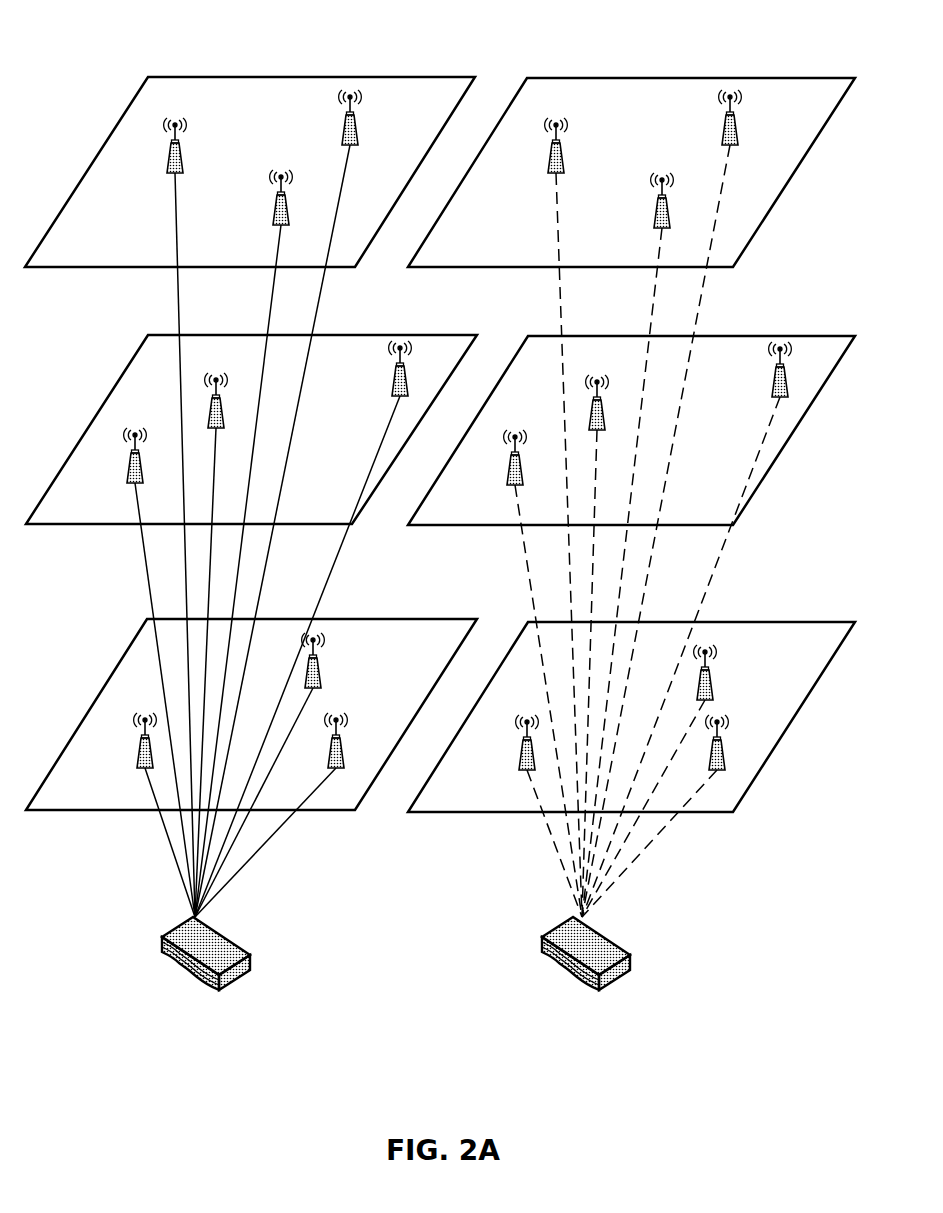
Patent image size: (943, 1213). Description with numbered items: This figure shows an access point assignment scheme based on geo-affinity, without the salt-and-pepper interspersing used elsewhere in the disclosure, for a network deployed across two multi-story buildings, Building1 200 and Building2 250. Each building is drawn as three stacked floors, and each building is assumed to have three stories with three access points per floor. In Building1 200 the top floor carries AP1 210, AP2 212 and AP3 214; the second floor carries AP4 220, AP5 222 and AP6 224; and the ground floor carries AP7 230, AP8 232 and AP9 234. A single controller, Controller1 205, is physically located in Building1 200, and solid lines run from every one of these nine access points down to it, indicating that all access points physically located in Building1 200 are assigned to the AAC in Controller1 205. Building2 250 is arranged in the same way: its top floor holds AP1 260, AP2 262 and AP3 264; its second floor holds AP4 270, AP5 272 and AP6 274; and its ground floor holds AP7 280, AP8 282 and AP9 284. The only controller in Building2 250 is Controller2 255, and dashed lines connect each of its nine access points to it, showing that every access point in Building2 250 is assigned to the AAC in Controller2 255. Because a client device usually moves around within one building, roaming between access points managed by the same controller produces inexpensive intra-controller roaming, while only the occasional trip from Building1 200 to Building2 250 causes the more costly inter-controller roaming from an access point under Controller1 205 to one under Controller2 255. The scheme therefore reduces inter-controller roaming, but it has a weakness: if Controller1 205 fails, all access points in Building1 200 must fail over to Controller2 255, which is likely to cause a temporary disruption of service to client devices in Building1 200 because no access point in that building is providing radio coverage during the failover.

The Building1 200 is at (282, 60).
The Controller1 205 is at (210, 1048).
The AP1 210 is at (152, 206).
The AP2 212 is at (329, 155).
The AP3 214 is at (329, 246).
The AP4 220 is at (186, 508).
The AP5 222 is at (269, 441).
The AP6 224 is at (384, 406).
The AP7 230 is at (166, 703).
The AP8 232 is at (304, 703).
The AP9 234 is at (322, 786).
The Building2 250 is at (677, 60).
The Controller2 255 is at (590, 1048).
The AP1 260 is at (534, 206).
The AP2 262 is at (709, 155).
The AP3 264 is at (709, 246).
The AP4 270 is at (569, 508).
The AP5 272 is at (649, 441).
The AP6 274 is at (764, 406).
The AP7 280 is at (547, 703).
The AP8 282 is at (684, 703).
The AP9 284 is at (702, 786).